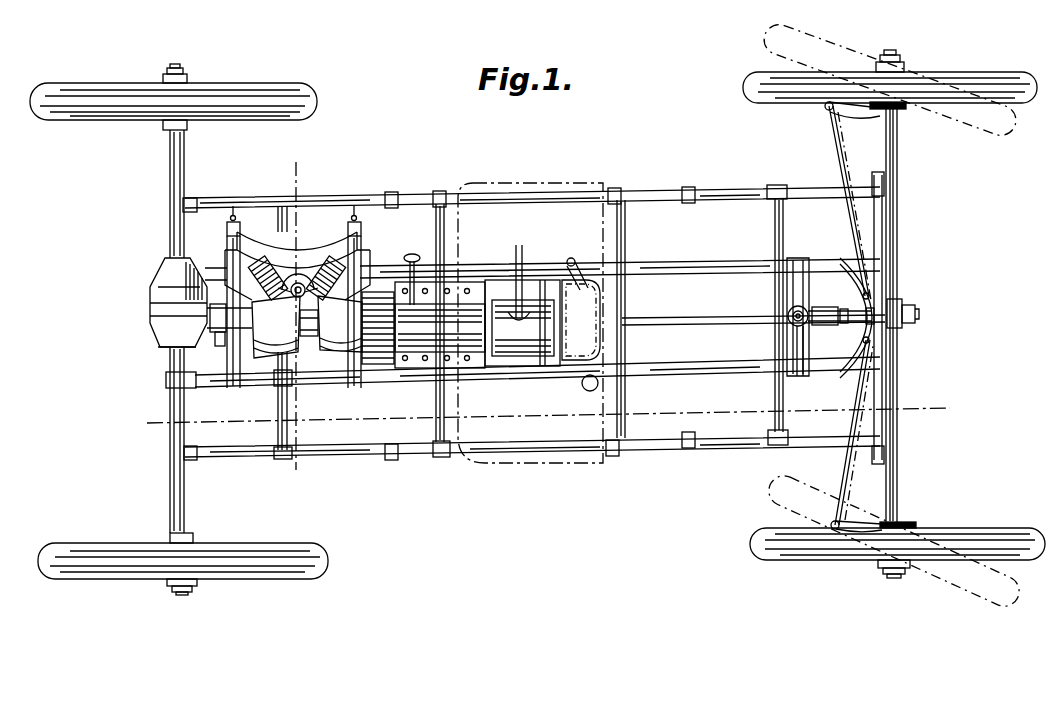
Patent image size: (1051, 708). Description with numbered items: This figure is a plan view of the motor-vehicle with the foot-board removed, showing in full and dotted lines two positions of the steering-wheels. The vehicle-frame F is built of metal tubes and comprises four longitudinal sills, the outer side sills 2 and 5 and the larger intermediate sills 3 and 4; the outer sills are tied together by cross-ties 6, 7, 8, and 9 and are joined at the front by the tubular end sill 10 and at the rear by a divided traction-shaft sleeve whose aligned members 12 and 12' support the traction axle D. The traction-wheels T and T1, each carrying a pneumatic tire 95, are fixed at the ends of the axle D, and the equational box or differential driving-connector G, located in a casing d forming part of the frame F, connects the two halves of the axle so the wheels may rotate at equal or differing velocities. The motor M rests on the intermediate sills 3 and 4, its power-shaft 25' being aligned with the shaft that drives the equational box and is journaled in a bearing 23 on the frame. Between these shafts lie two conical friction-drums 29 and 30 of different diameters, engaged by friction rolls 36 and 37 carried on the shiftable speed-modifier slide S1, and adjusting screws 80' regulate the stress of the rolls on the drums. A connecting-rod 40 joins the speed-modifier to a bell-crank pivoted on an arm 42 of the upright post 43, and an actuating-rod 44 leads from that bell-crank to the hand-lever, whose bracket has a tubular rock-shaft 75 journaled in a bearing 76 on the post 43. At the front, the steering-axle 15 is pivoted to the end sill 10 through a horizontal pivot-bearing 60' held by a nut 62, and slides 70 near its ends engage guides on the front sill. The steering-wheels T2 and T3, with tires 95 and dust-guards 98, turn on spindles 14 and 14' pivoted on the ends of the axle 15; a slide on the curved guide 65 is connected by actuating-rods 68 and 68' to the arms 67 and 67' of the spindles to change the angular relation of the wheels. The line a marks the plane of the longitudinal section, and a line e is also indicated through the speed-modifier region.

The side sill 2 is at (652, 441).
The intermediate sill 3 is at (648, 366).
The intermediate sill 4 is at (644, 266).
The side sill 5 is at (645, 190).
The cross-tie 6 is at (280, 430).
The cross-tie 7 is at (436, 424).
The cross-tie 8 is at (617, 423).
The cross-tie 9 is at (776, 417).
The end sill 10 is at (883, 225).
The traction-shaft sleeve member 12 is at (166, 194).
The traction-shaft sleeve member 12' is at (164, 440).
The spindle 14 is at (900, 117).
The spindle 14' is at (906, 512).
The steering-axle 15 is at (897, 230).
The bearing 23 is at (220, 340).
The pivot rod 25' is at (505, 277).
The conical friction-drum 29 is at (350, 360).
The conical friction-drum 30 is at (275, 360).
The friction roll 36 is at (336, 297).
The friction roll 37 is at (266, 260).
The connecting-rod 40 is at (388, 270).
The arm 42 is at (820, 325).
The upright post 43 is at (790, 322).
The actuating-rod 44 is at (808, 312).
The horizontal pivot-bearing 60' is at (908, 293).
The nut 62 is at (910, 305).
The curved guide 65 is at (897, 328).
The arm 67 is at (854, 119).
The arm 67' is at (858, 506).
The actuating-rod 68 is at (834, 201).
The actuating-rod 68' is at (838, 434).
The slide 70 is at (874, 172).
The rock-shaft 75 is at (790, 313).
The bearing 76 is at (795, 330).
The adjusting screw 80' is at (302, 282).
The pneumatic tire 95 is at (278, 88).
The dust-guard 98 is at (895, 60).
The traction-wheel T is at (238, 84).
The traction-wheel T1 is at (247, 543).
The steering-wheel T2 is at (890, 79).
The steering-wheel T3 is at (897, 541).
The speed-modifier slide S1 is at (310, 262).
The equational box G is at (170, 302).
The casing d is at (150, 316).
The traction axle D is at (171, 357).
The motor M is at (496, 335).
The section line a is at (170, 423).
The center line e is at (297, 314).
The vehicle-frame F is at (476, 329).